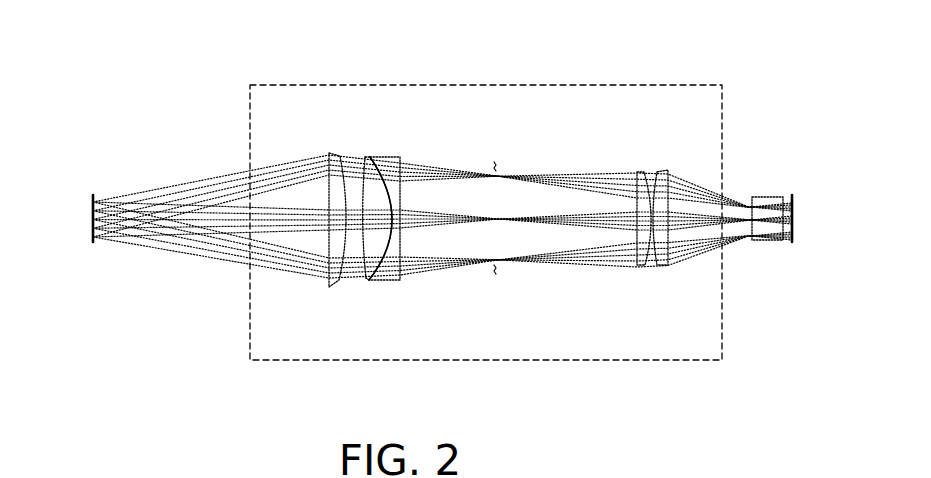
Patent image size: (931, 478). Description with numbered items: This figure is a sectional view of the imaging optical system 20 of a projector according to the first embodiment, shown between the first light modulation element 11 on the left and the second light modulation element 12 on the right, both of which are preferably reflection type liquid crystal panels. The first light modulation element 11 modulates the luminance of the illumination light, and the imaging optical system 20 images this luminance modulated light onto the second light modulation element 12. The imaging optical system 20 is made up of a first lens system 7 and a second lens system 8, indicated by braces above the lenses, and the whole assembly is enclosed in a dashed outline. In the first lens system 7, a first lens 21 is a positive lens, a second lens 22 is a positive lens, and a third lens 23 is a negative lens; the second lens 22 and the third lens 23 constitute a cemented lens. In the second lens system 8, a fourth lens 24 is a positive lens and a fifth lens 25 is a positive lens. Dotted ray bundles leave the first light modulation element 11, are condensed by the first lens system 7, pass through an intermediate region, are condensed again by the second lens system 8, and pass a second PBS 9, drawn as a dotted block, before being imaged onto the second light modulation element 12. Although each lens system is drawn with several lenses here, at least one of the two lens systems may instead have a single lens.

The imaging optical system 20 is at (500, 85).
The first lens system 7 is at (318, 141).
The second lens system 8 is at (627, 165).
The second PBS 9 is at (767, 195).
The first light modulation element 11 is at (92, 232).
The second light modulation element 12 is at (793, 225).
The first lens 21 is at (330, 270).
The second lens 22 is at (370, 270).
The third lens 23 is at (397, 270).
The fourth lens 24 is at (641, 254).
The fifth lens 25 is at (660, 254).